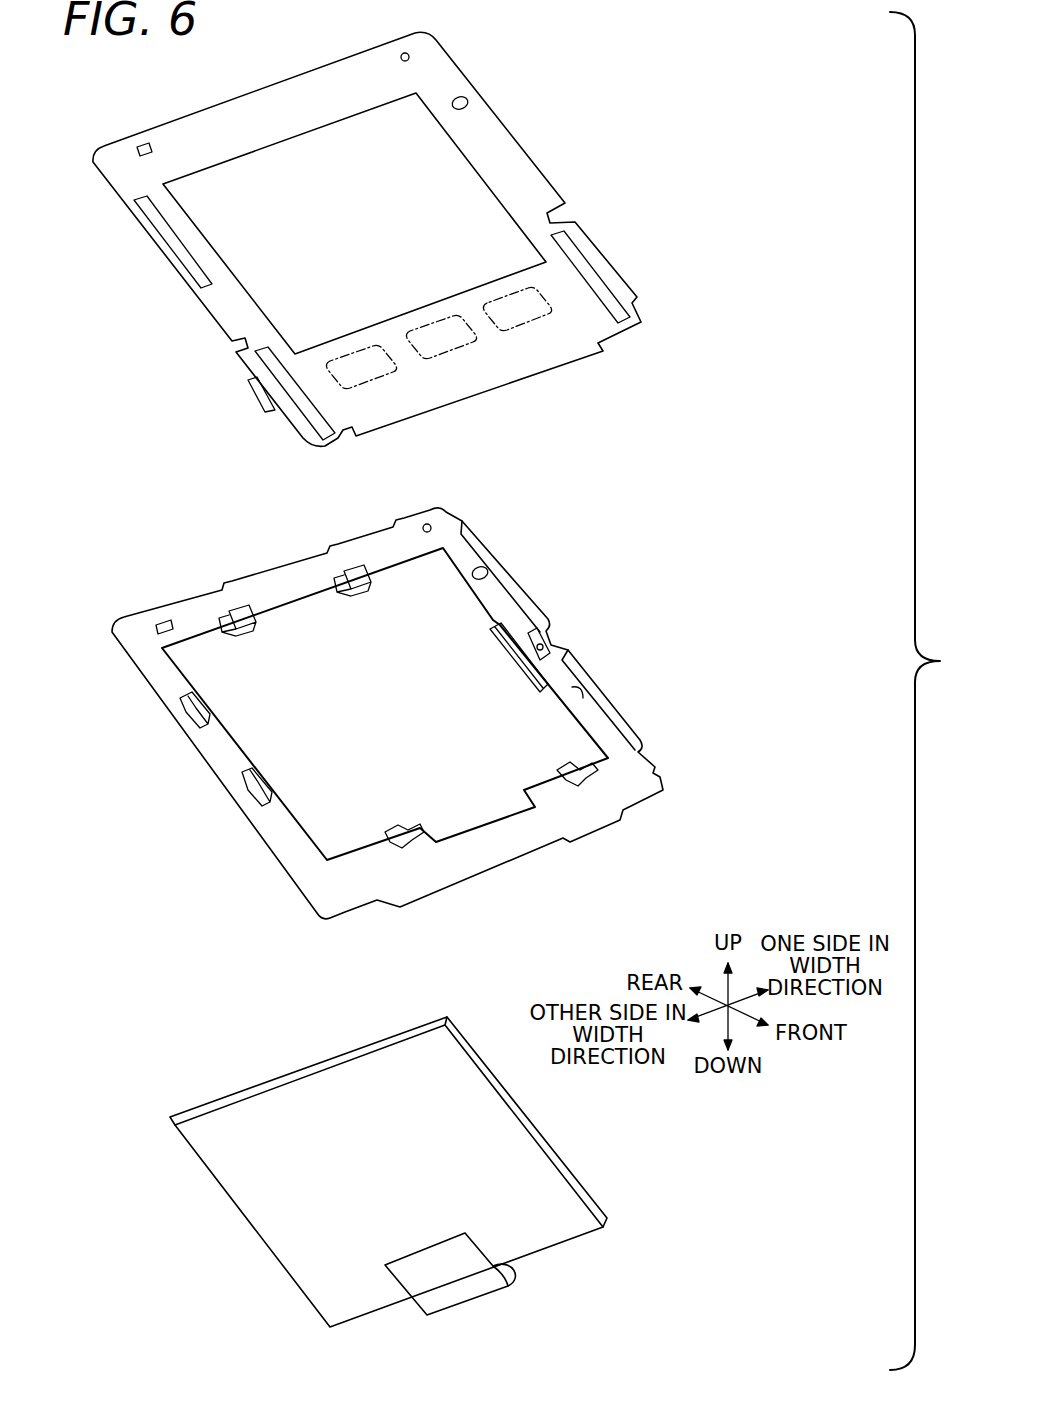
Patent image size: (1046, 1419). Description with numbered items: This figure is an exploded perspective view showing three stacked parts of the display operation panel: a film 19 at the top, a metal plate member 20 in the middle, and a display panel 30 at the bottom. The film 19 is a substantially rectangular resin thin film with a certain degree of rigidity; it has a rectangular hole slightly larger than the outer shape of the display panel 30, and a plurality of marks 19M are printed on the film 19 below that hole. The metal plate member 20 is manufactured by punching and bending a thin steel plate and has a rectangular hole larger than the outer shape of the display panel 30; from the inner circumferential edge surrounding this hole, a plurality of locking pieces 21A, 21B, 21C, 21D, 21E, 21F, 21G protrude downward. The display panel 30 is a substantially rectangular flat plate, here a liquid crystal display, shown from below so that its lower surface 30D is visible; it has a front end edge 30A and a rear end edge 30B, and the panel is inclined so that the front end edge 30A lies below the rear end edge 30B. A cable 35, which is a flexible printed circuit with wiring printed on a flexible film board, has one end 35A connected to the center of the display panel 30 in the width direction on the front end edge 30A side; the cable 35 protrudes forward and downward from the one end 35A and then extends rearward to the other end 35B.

The film 19 is at (382, 239).
The marks 19M is at (528, 308).
The metal plate member 20 is at (380, 713).
The locking piece 21A is at (252, 632).
The locking piece 21B is at (370, 590).
The locking piece 21C is at (505, 660).
The locking piece 21D is at (566, 764).
The locking piece 21E is at (402, 828).
The locking piece 21F is at (248, 788).
The locking piece 21G is at (190, 715).
The display panel 30 is at (387, 1170).
The front end edge 30A is at (572, 1245).
The rear end edge 30B is at (332, 1060).
The lower surface 30D is at (352, 1140).
The cable 35 is at (473, 1264).
The one end 35A is at (505, 1265).
The other end 35B is at (432, 1252).